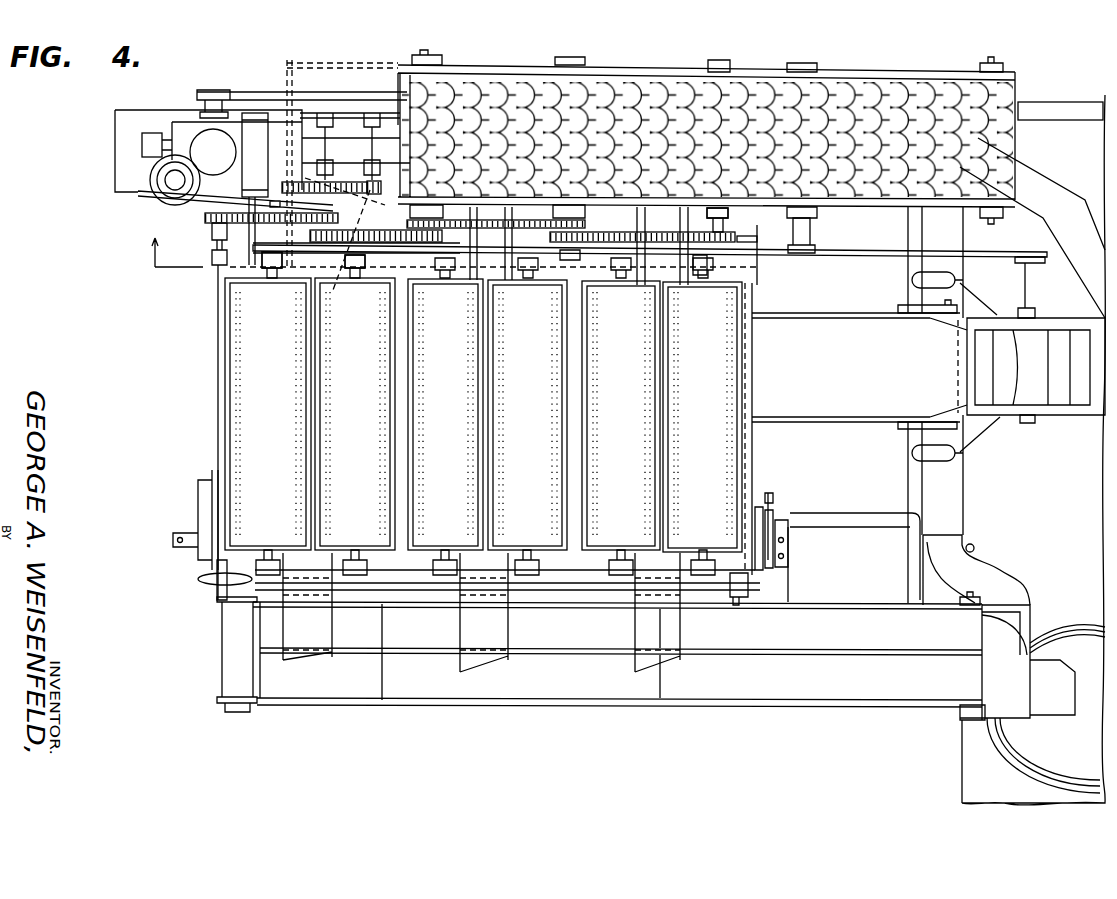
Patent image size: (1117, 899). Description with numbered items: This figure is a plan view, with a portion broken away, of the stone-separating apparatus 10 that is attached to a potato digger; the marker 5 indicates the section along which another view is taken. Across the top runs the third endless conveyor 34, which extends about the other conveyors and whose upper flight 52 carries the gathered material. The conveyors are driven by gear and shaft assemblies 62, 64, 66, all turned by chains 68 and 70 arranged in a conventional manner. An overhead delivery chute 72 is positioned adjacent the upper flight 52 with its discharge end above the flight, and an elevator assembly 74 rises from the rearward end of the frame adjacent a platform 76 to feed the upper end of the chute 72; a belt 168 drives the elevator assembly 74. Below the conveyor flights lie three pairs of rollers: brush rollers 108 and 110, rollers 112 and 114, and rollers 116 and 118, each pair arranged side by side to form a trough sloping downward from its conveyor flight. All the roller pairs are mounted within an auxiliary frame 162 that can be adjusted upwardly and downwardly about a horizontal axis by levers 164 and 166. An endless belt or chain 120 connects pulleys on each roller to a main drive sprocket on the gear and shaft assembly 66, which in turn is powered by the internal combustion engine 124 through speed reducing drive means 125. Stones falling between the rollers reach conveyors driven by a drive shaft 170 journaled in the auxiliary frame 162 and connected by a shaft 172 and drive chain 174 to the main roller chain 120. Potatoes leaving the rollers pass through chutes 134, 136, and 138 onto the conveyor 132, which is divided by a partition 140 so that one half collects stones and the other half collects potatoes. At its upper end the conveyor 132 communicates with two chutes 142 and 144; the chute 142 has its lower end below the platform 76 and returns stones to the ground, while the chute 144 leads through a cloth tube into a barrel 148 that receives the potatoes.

The apparatus 10 is at (543, 716).
The third endless conveyor 34 is at (865, 82).
The upper flight of the third conveyor 52 is at (683, 95).
The gear and shaft assembly 62 is at (721, 235).
The gear and shaft assembly 64 is at (578, 250).
The gear and shaft assembly 66 is at (400, 240).
The chain 68 is at (600, 233).
The chain 70 is at (372, 233).
The overhead delivery chute 72 is at (1040, 190).
The elevator assembly 74 is at (1056, 405).
The platform 76 is at (1055, 130).
The brush roller 108 is at (275, 484).
The brush roller 110 is at (362, 484).
The roller 112 is at (459, 480).
The roller 114 is at (539, 480).
The roller 116 is at (635, 476).
The roller 118 is at (712, 476).
The endless belt or chain 120 is at (305, 255).
The internal combustion engine 124 is at (125, 178).
The speed reducing drive means 125 is at (350, 163).
The conveyor 132 is at (797, 694).
The chute 134 is at (322, 636).
The chute 136 is at (497, 636).
The chute 138 is at (672, 636).
The partition 140 is at (860, 660).
The chute 142 is at (1020, 630).
The chute 144 is at (1067, 701).
The barrel 148 is at (1000, 755).
The auxiliary frame 162 is at (757, 465).
The lever 164 is at (200, 515).
The lever 166 is at (785, 505).
The belt 168 is at (860, 256).
The drive shaft 170 is at (560, 592).
The shaft 172 is at (755, 352).
The drive chain 174 is at (789, 235).
The section line 5 is at (177, 249).